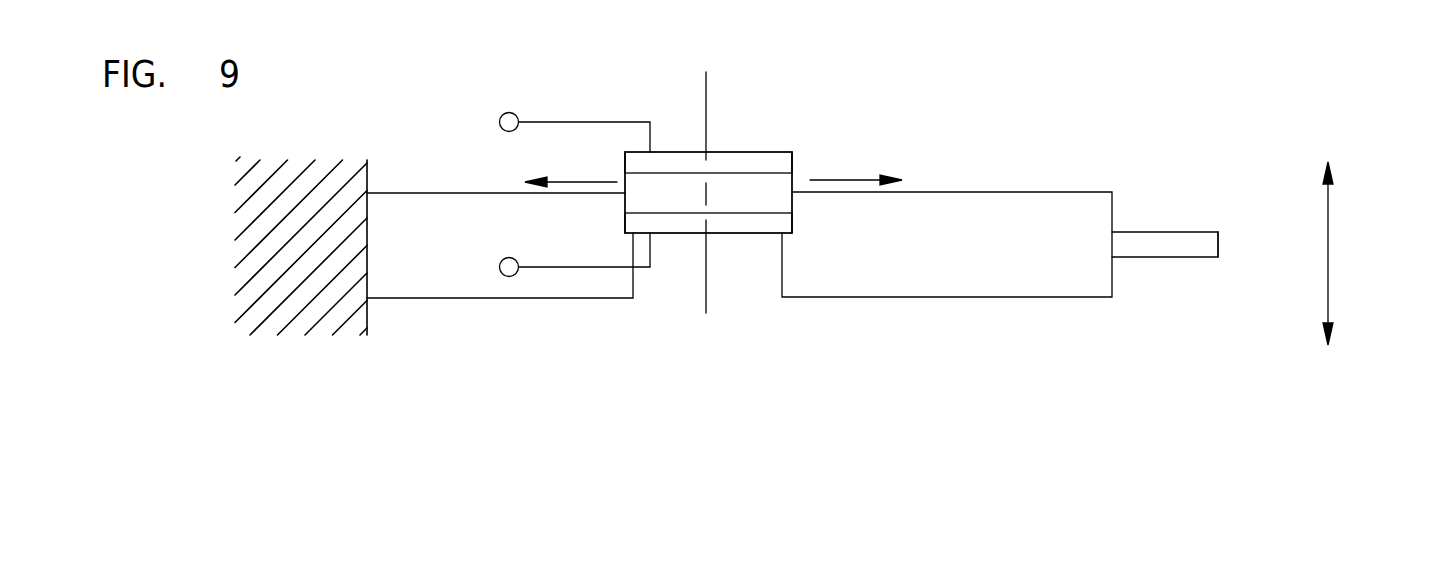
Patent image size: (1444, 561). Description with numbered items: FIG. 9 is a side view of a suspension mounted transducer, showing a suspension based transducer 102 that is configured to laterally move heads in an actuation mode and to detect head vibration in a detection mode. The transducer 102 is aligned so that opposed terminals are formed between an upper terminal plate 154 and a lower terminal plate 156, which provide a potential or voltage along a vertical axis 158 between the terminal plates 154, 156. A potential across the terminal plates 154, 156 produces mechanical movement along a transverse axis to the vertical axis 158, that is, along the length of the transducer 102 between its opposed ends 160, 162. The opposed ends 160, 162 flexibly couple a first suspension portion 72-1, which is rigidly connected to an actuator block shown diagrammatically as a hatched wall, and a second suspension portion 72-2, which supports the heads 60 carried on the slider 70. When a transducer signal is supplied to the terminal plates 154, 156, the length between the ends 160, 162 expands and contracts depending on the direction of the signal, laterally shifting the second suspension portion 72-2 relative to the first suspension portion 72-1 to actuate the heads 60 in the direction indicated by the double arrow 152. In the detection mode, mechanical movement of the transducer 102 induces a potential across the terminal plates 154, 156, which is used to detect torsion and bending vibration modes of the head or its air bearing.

The first suspension portion 72-1 is at (407, 173).
The second suspension portion 72-2 is at (987, 172).
The slider 70 is at (1132, 242).
The heads 60 is at (1238, 209).
The suspension based transducer 102 is at (736, 127).
The upper terminal plate 154 is at (760, 163).
The lower terminal plate 156 is at (728, 227).
The vertical axis 158 is at (705, 280).
The opposed end 160 is at (623, 158).
The opposed end 162 is at (793, 157).
The displacement direction 152 is at (1328, 235).